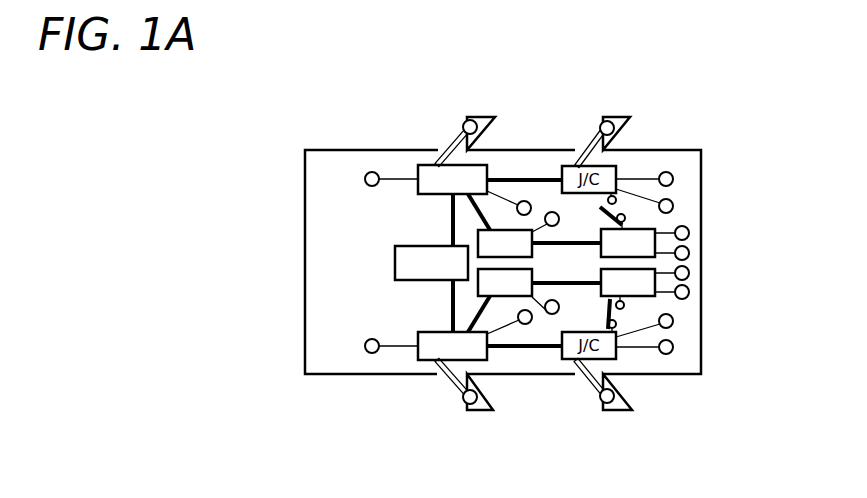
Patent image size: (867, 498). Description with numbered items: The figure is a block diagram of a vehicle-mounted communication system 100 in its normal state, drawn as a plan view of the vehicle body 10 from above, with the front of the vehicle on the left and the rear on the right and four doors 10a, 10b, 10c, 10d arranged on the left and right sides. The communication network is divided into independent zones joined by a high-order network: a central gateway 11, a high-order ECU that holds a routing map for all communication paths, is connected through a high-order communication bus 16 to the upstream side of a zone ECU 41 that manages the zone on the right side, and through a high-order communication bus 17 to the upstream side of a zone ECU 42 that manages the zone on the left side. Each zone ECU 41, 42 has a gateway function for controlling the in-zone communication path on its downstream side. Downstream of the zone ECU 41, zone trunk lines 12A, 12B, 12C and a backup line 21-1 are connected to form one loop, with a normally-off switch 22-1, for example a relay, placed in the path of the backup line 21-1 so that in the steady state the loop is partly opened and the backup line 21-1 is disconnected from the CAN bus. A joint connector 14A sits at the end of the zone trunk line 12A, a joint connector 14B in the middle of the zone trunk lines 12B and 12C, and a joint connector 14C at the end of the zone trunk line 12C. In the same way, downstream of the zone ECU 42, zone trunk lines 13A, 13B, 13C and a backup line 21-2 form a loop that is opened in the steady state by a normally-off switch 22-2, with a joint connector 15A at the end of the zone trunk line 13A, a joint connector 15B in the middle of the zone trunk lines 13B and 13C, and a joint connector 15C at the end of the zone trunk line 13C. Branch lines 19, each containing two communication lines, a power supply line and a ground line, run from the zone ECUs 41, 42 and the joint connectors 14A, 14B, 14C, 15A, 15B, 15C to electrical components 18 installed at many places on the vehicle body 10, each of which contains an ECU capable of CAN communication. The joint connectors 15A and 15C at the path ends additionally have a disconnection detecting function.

The vehicle body 10 is at (330, 150).
The door 10a is at (481, 117).
The door 10b is at (481, 411).
The door 10c is at (614, 117).
The door 10d is at (617, 411).
The central gateway 11 is at (395, 262).
The zone trunk line 12A is at (533, 180).
The zone trunk line 12B is at (480, 216).
The zone trunk line 12C is at (562, 243).
The zone trunk line 13A is at (528, 348).
The zone trunk line 13B is at (480, 311).
The zone trunk line 13C is at (560, 283).
The joint connector 14A is at (612, 150).
The joint connector 14B is at (478, 237).
The joint connector 14C is at (689, 233).
The joint connector 15A is at (614, 368).
The joint connector 15B is at (478, 285).
The joint connector 15C is at (689, 296).
The high-order communication bus 16 is at (452, 203).
The high-order communication bus 17 is at (452, 322).
The electrical component 18 is at (372, 172).
The branch line 19 is at (400, 179).
The backup line 21-1 is at (632, 229).
The backup line 21-2 is at (650, 297).
The switch 22-1 is at (620, 208).
The switch 22-2 is at (620, 331).
The zone ECU 41 is at (431, 165).
The zone ECU 42 is at (430, 360).
The communication system 100 is at (313, 383).